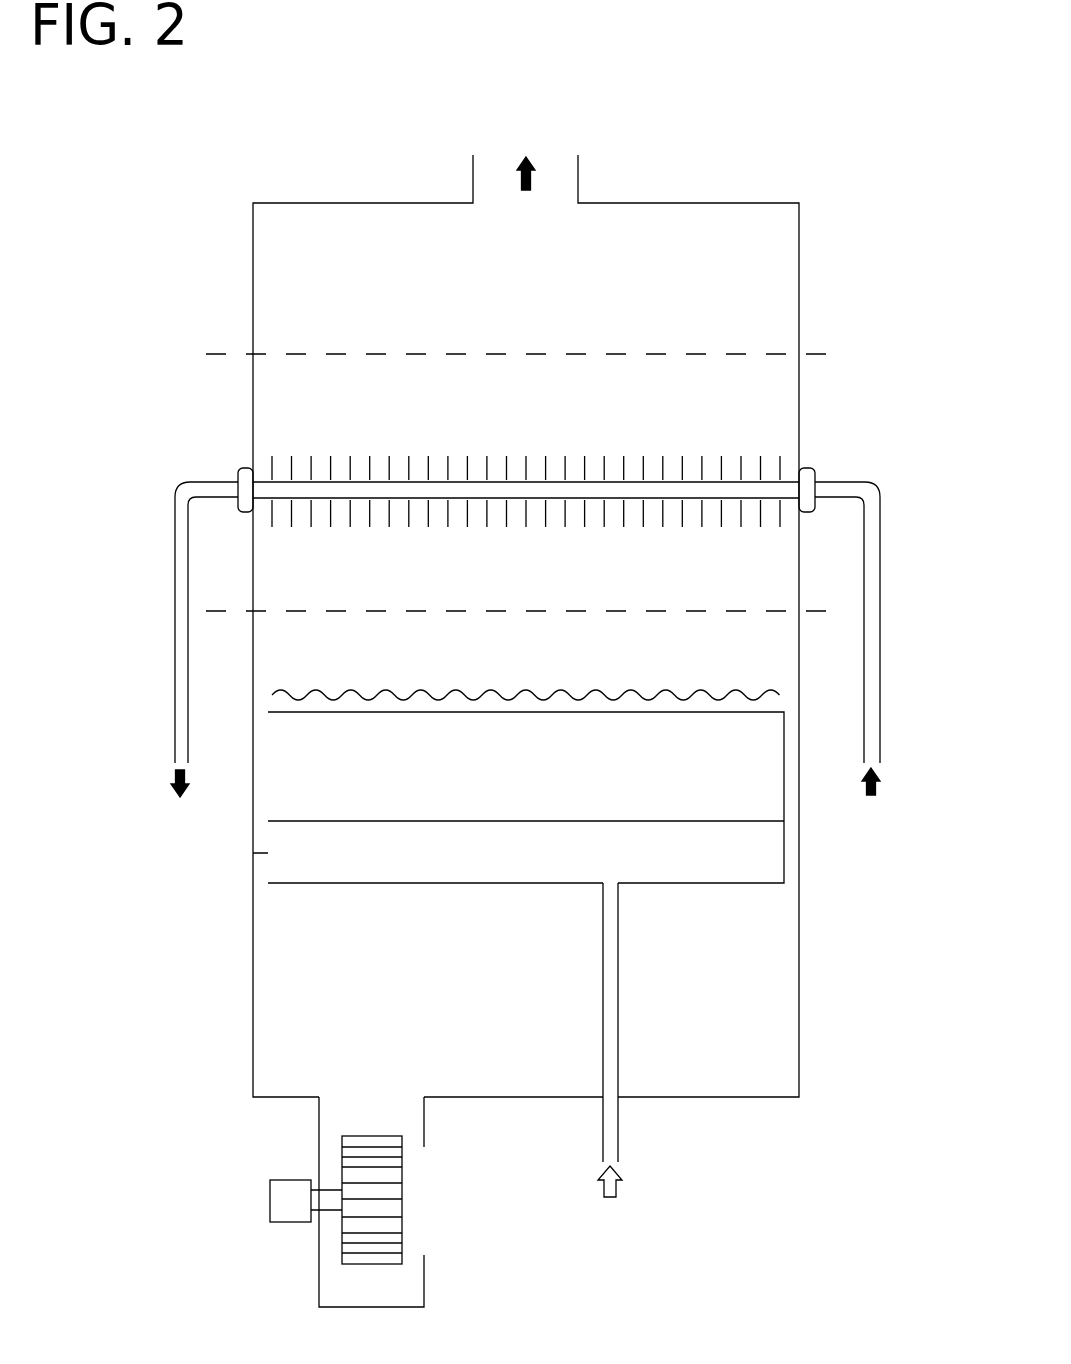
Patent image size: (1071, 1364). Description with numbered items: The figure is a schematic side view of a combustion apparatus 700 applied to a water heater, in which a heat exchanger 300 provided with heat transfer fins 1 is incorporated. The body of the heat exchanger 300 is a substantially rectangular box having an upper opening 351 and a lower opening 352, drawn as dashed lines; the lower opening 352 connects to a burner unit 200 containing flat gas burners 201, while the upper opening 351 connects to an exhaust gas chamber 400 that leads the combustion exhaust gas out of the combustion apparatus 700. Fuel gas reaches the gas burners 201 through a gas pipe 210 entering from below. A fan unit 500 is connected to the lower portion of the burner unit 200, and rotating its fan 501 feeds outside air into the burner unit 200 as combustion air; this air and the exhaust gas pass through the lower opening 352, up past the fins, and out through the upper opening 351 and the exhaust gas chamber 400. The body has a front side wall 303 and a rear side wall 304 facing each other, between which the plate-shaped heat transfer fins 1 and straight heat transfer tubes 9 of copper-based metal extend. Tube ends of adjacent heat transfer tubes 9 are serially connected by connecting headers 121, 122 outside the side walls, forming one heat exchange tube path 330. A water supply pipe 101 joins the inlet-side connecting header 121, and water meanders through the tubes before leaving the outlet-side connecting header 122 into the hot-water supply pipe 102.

The combustion apparatus 700 is at (526, 726).
The exhaust gas chamber 400 is at (799, 265).
The heat exchanger 300 is at (526, 580).
The rear side wall 304 is at (253, 412).
The front side wall 303 is at (799, 412).
The upper opening 351 is at (395, 352).
The lower opening 352 is at (395, 610).
The heat transfer fin 1 is at (526, 538).
The heat transfer tube 9 is at (596, 500).
The heat exchange tube path 330 is at (497, 537).
The connecting header 122 is at (240, 472).
The connecting header 121 is at (815, 474).
The hot-water supply pipe 102 is at (175, 538).
The water supply pipe 101 is at (880, 540).
The burner unit 200 is at (478, 923).
The gas burner 201 is at (268, 853).
The gas pipe 210 is at (603, 983).
The fan unit 500 is at (373, 1202).
The fan 501 is at (402, 1163).